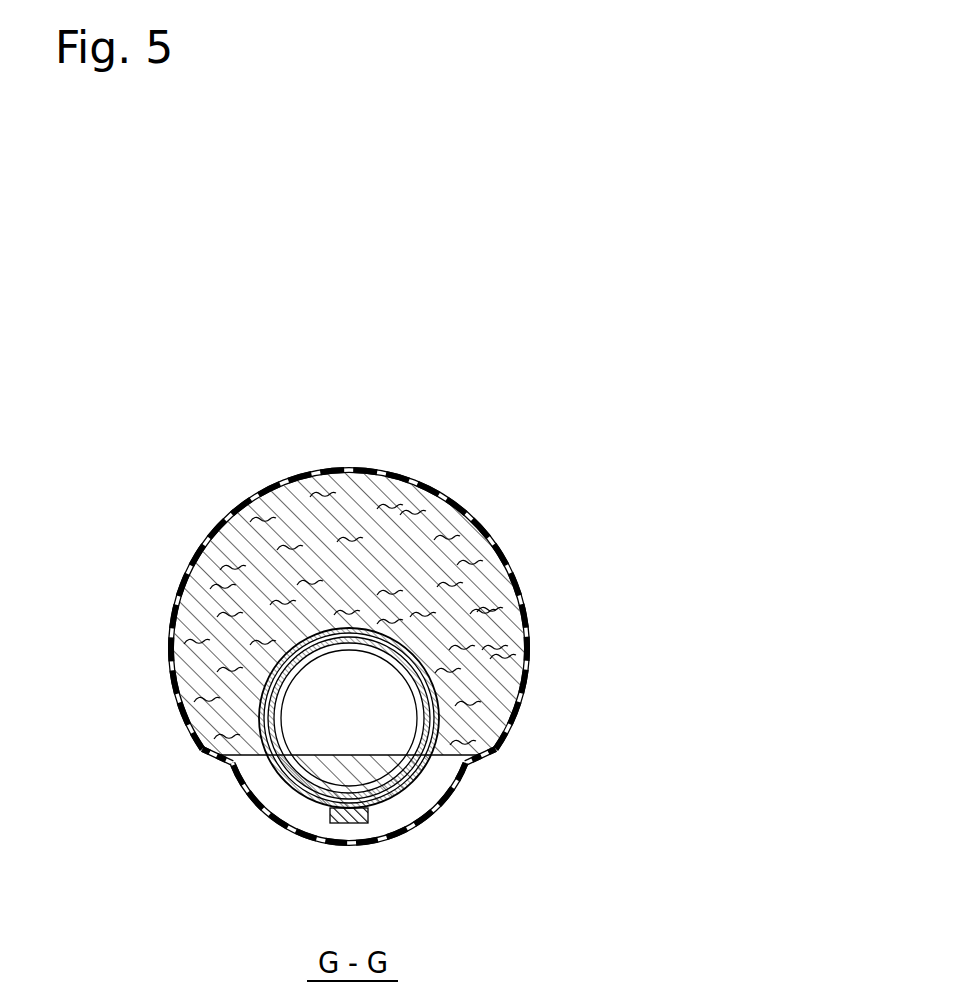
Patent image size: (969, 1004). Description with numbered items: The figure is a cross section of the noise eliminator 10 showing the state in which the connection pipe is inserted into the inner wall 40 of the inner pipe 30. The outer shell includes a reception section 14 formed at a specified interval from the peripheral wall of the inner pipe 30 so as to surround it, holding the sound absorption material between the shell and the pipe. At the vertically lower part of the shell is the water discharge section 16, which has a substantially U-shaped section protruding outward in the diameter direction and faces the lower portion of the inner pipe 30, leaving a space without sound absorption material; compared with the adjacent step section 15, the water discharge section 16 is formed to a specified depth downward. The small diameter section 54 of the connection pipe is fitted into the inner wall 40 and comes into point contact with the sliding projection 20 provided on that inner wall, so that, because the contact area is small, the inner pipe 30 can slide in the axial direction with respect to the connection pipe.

The noise eliminator 10 is at (600, 474).
The reception section 14 is at (163, 658).
The step section 15 is at (213, 763).
The water discharge section 16 is at (278, 838).
The sliding projection 20 is at (350, 632).
The inner pipe 30 is at (417, 653).
The inner wall 40 is at (287, 670).
The small diameter section 54 is at (443, 717).